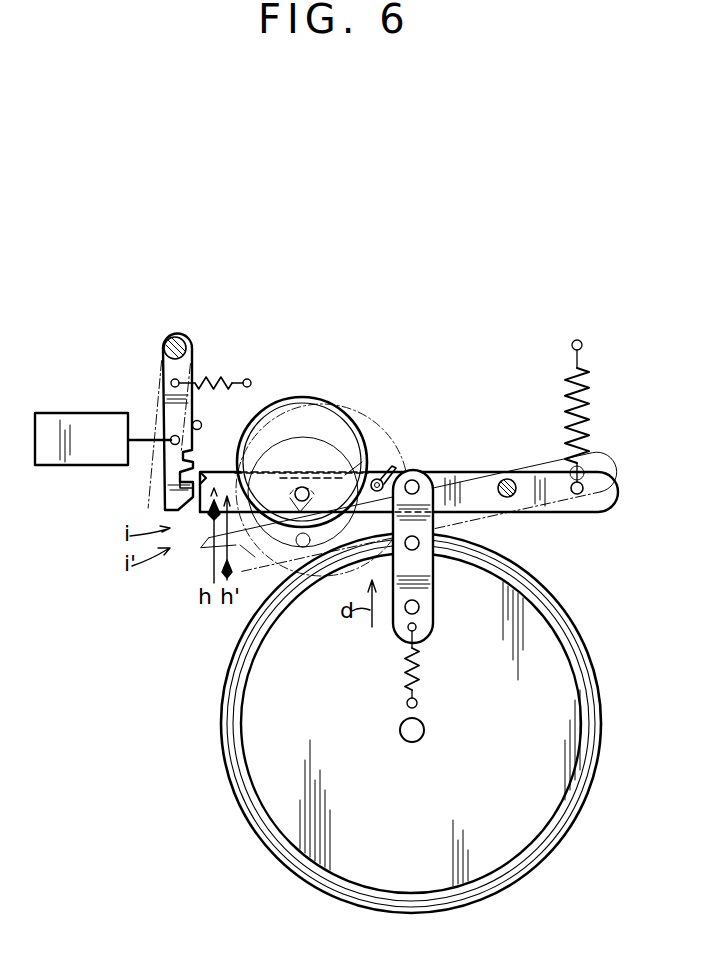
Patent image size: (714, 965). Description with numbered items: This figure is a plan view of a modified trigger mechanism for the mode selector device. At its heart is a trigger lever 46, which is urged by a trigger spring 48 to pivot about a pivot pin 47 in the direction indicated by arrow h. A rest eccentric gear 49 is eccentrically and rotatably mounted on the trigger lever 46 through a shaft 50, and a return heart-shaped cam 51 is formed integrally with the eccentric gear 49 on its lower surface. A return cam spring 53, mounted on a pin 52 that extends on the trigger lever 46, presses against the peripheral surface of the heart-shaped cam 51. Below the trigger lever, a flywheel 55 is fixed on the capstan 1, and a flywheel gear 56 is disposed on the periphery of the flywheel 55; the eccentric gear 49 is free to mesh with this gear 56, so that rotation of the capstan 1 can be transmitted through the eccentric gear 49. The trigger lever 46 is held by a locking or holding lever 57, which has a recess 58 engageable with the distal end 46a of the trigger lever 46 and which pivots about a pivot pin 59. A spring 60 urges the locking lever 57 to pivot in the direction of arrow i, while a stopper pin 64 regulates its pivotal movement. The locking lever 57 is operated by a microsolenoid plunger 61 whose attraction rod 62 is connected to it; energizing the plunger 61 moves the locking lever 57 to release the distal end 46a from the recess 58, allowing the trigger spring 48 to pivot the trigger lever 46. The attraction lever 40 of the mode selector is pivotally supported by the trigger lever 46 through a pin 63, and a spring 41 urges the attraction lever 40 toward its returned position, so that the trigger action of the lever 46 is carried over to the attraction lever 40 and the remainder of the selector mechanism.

The capstan 1 is at (400, 730).
The attraction lever 40 is at (432, 582).
The spring 41 is at (406, 672).
The trigger lever 46 is at (478, 470).
The distal end of trigger lever 46a is at (205, 478).
The pivot pin 47 is at (512, 496).
The trigger spring 48 is at (586, 402).
The rest eccentric gear 49 is at (352, 414).
The shaft 50 is at (302, 486).
The return heart-shaped cam 51 is at (282, 560).
The pin 52 is at (384, 480).
The return cam spring 53 is at (360, 466).
The flywheel 55 is at (580, 722).
The flywheel gear 56 is at (588, 778).
The locking lever 57 is at (163, 403).
The recess 58 is at (185, 480).
The pivot pin 59 is at (177, 337).
The spring 60 is at (206, 378).
The microsolenoid plunger 61 is at (53, 425).
The attraction rod 62 is at (146, 436).
The pin 63 is at (418, 484).
The stopper pin 64 is at (202, 425).